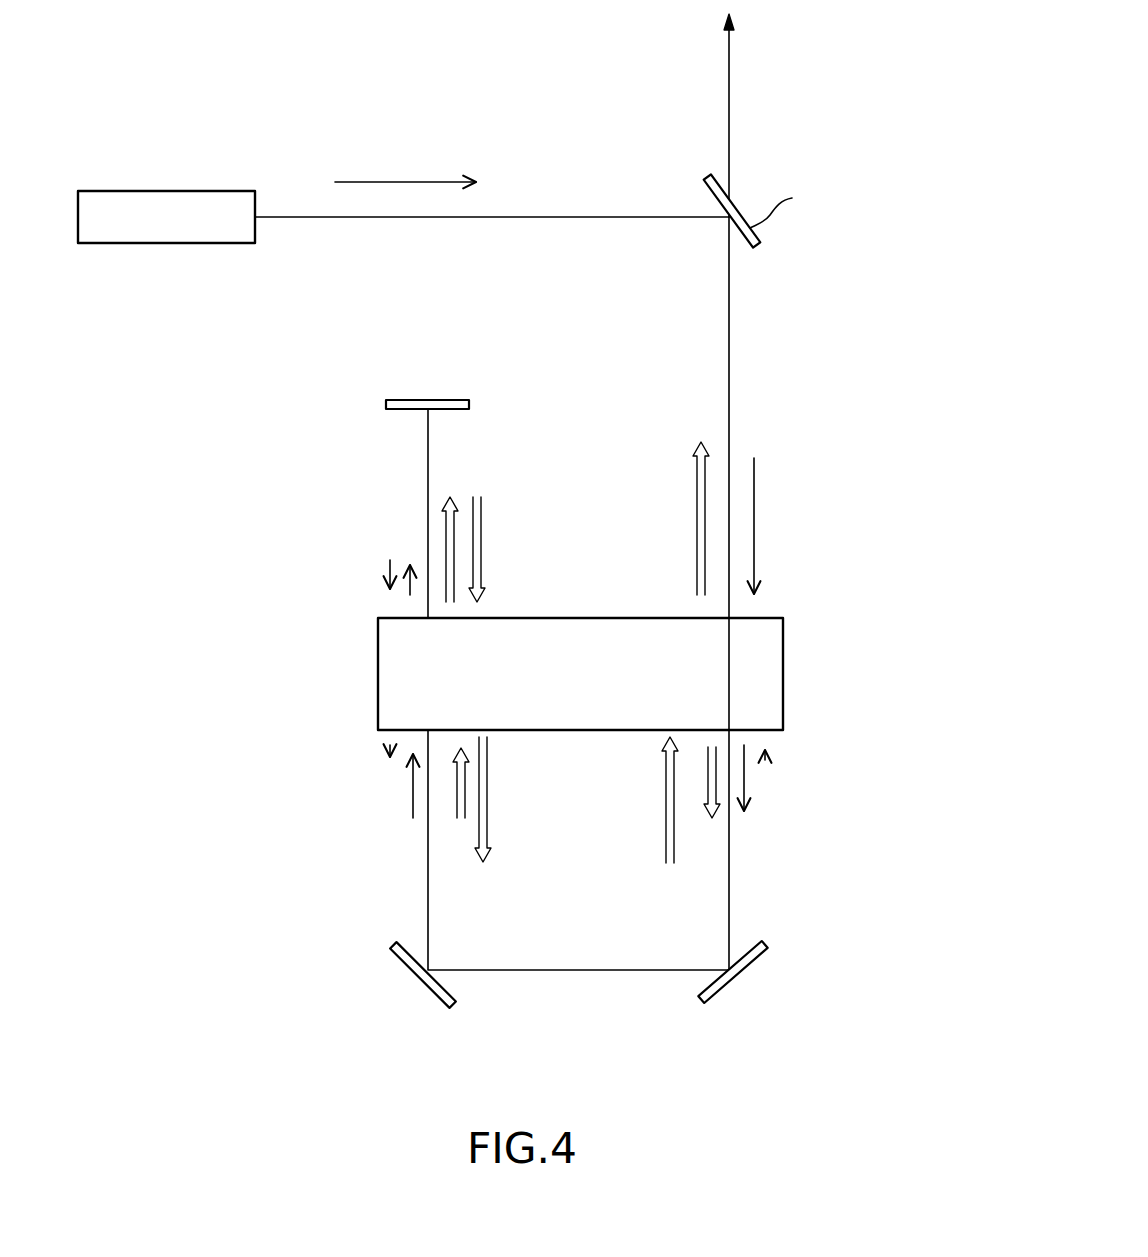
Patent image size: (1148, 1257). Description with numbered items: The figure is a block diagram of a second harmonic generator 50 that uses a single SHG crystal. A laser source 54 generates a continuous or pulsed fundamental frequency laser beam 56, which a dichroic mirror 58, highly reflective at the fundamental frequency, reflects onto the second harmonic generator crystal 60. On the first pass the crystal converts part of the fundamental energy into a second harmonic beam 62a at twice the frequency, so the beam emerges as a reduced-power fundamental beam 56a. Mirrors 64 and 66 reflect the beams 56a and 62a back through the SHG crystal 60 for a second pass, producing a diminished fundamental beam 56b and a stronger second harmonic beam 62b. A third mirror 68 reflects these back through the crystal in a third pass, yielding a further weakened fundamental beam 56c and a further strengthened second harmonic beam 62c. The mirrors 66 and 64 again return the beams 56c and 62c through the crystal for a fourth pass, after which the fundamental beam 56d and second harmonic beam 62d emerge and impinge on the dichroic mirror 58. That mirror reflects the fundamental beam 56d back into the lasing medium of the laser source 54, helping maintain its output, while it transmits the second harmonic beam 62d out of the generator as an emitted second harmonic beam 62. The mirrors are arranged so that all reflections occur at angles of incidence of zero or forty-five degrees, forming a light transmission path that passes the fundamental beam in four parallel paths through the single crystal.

The second harmonic generator 50 is at (276, 882).
The laser source 54 is at (183, 190).
The fundamental frequency laser beam 56 is at (390, 181).
The fundamental beam 56a is at (410, 782).
The fundamental beam 56b is at (390, 560).
The fundamental beam 56c is at (390, 745).
The fundamental beam 56d is at (538, 219).
The dichroic mirror 58 is at (705, 181).
The second harmonic generator (SHG) crystal 60 is at (785, 683).
The emitted second harmonic beam 62 is at (729, 60).
The second harmonic beam 62a is at (458, 800).
The second harmonic beam 62b is at (455, 520).
The second harmonic beam 62c is at (488, 785).
The second harmonic beam 62d is at (697, 506).
The mirror 64 is at (752, 968).
The mirror 66 is at (425, 988).
The third mirror 68 is at (415, 400).